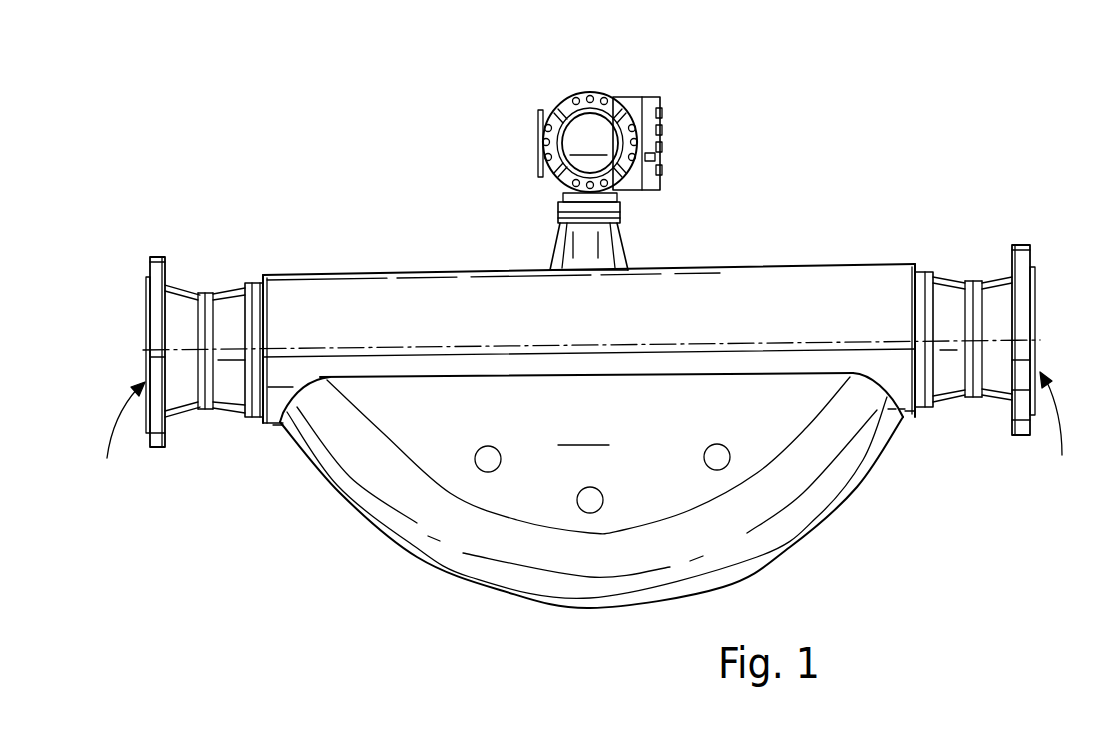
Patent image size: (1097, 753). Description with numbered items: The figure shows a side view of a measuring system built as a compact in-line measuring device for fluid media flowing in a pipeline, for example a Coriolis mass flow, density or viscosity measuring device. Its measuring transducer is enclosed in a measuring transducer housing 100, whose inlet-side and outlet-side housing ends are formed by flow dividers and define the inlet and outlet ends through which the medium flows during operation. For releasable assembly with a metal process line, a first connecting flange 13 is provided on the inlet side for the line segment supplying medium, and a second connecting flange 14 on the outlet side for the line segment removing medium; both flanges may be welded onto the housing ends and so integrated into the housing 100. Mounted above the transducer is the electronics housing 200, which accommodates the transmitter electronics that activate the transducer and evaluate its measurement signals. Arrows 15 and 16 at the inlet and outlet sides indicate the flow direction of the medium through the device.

The measuring transducer housing 100 is at (728, 282).
The electronics housing 200 is at (637, 107).
The first connecting flange 13 is at (157, 262).
The second connecting flange 14 is at (1021, 250).
The inlet / flow direction arrow 15 is at (116, 438).
The outlet / flow direction arrow 16 is at (1058, 433).